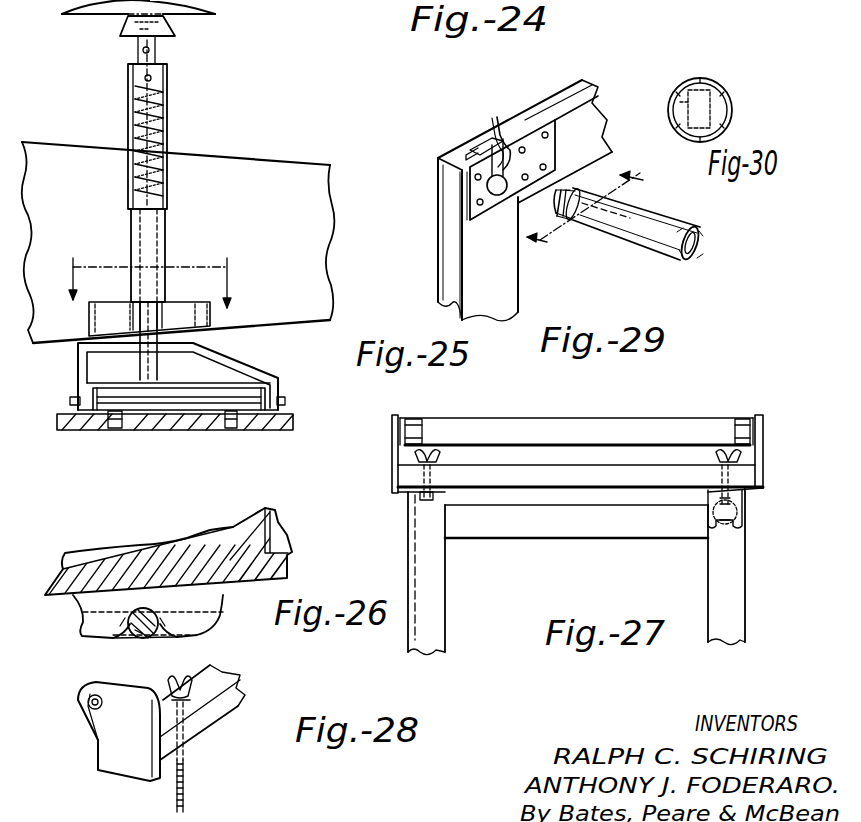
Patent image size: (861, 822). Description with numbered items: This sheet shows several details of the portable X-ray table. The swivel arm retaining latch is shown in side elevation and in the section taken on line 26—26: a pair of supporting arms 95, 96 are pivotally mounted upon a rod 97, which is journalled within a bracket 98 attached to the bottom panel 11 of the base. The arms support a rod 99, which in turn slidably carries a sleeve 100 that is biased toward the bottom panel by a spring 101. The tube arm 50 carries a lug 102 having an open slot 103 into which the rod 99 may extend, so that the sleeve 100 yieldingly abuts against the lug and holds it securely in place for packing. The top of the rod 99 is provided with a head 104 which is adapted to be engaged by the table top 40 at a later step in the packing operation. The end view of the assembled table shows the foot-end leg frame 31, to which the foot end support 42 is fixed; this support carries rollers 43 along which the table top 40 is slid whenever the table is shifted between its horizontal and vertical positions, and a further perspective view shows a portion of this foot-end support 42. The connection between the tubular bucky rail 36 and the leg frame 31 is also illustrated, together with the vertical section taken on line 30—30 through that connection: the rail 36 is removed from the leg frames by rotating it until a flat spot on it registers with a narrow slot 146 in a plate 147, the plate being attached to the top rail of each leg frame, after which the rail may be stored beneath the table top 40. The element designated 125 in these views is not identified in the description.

In FIG. 25, the bottom wall 11 is at (182, 431).
In FIG. 25, the section line 26— 26 is at (151, 296).
In FIG. 29, the section line 30— 30 is at (599, 216).
In FIG. 27, the leg frame 31 is at (740, 570).
In FIG. 29, the leg frame 31 is at (438, 246).
In FIG. 29, the tubular bucky rail 36 is at (677, 218).
In FIG. 30, the tubular bucky rail 36 is at (728, 94).
In FIG. 25, the table top 40 is at (86, 16).
In FIG. 27, the table top 40 is at (625, 400).
In FIG. 28, the foot end support 42 is at (213, 722).
In FIG. 27, the foot end support 42 is at (742, 473).
In FIG. 29, the foot end support 42 is at (525, 141).
In FIG. 27, the rollers 43 is at (395, 432).
In FIG. 25, the tube arm 50 is at (298, 164).
In FIG. 26, the tube arm 50 is at (170, 550).
In FIG. 25, the supporting arm 95 is at (243, 362).
In FIG. 26, the supporting arm 95 is at (217, 630).
In FIG. 25, the supporting arm 96 is at (195, 362).
In FIG. 25, the rod 97 is at (286, 401).
In FIG. 25, the bracket 98 is at (250, 428).
In FIG. 25, the rod 99 is at (142, 365).
In FIG. 26, the rod 99 is at (143, 639).
In FIG. 25, the sleeve 100 is at (168, 228).
In FIG. 26, the sleeve 100 is at (112, 630).
In FIG. 25, the spring 101 is at (158, 110).
In FIG. 25, the lug 102 is at (119, 303).
In FIG. 26, the lug 102 is at (217, 598).
In FIG. 25, the open slot 103 is at (160, 318).
In FIG. 25, the head 104 is at (176, 33).
In FIG. 29, the mounting plate 125 is at (565, 199).
In FIG. 30, the mounting plate 125 is at (668, 108).
In FIG. 29, the narrow slot 146 is at (497, 137).
In FIG. 29, the plate 147 is at (478, 158).